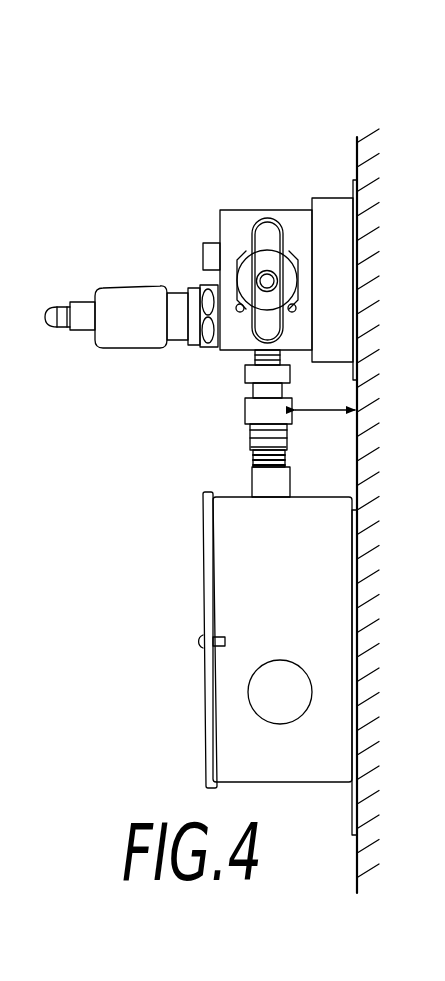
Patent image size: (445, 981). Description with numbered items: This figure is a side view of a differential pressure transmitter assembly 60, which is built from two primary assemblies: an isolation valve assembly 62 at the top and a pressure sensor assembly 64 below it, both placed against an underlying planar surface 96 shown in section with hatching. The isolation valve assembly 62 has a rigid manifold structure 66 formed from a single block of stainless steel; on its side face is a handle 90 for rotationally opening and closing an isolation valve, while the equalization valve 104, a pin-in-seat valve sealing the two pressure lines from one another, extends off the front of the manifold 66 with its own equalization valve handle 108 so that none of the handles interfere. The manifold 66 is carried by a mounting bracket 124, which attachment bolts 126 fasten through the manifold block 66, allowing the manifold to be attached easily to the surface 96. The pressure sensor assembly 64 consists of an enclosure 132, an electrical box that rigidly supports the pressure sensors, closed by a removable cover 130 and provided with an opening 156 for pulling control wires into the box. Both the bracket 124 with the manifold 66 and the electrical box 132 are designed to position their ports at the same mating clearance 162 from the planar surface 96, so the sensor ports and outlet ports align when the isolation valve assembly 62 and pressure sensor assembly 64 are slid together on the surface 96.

The differential pressure transmitter assembly 60 is at (178, 153).
The isolation valve assembly 62 is at (262, 168).
The pressure sensor assembly 64 is at (195, 552).
The rigid manifold structure 66 is at (292, 220).
The handle 90 is at (257, 233).
The underlying planar surface 96 is at (421, 337).
The equalization valve 104 is at (130, 295).
The equalization valve handle 108 is at (80, 302).
The mounting bracket 124 is at (343, 223).
The attachment bolts 126 is at (203, 247).
The removable cover 130 is at (203, 680).
The enclosure 132 is at (233, 585).
The opening 156 is at (252, 711).
The clearance 162 is at (330, 412).